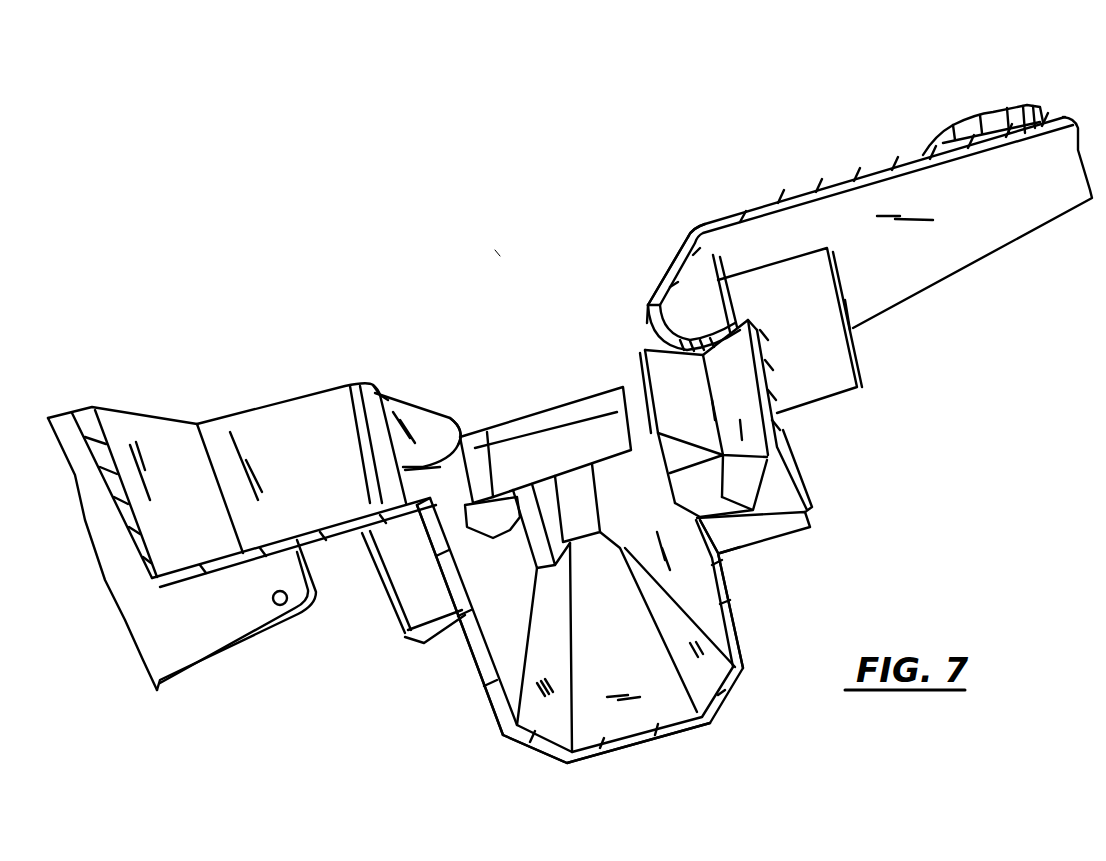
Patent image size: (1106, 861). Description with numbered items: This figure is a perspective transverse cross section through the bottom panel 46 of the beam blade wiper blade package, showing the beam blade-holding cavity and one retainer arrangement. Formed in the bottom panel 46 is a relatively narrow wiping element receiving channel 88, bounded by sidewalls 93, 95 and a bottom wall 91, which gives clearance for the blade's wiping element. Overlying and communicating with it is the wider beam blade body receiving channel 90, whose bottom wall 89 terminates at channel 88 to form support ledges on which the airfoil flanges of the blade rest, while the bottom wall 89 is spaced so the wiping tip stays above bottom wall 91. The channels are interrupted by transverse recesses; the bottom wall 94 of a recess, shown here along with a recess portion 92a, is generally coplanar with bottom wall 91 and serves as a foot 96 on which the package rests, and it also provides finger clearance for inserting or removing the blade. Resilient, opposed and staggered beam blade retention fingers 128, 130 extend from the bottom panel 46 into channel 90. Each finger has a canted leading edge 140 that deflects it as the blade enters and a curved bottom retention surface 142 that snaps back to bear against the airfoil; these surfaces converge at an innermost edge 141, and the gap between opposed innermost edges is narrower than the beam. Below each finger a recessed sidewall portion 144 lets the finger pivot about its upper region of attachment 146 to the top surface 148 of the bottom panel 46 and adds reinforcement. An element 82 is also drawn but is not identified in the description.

The bottom panel 46 is at (497, 250).
The mounting flange 82 is at (997, 110).
The wiping element receiving channel 88 is at (525, 754).
The bottom wall of channel 90 89 is at (782, 433).
The beam blade body receiving channel 90 is at (507, 448).
The bottom wall of channel 88 91 is at (657, 742).
The flange 92a is at (819, 511).
The sidewall of channel 88 93 is at (492, 707).
The bottom wall of recess 94 is at (798, 533).
The sidewall of channel 88 95 is at (742, 638).
The foot 96 is at (760, 544).
The beam blade retention finger 128 is at (651, 203).
The beam blade retention finger 130 is at (387, 368).
The inclined leading edge 140 is at (400, 400).
The innermost edge 141 is at (455, 422).
The bottom beam blade retention surface 142 is at (655, 340).
The recessed sidewall portion 144 is at (485, 515).
The upper region of attachment 146 is at (374, 388).
The top surface of bottom panel 148 is at (257, 400).